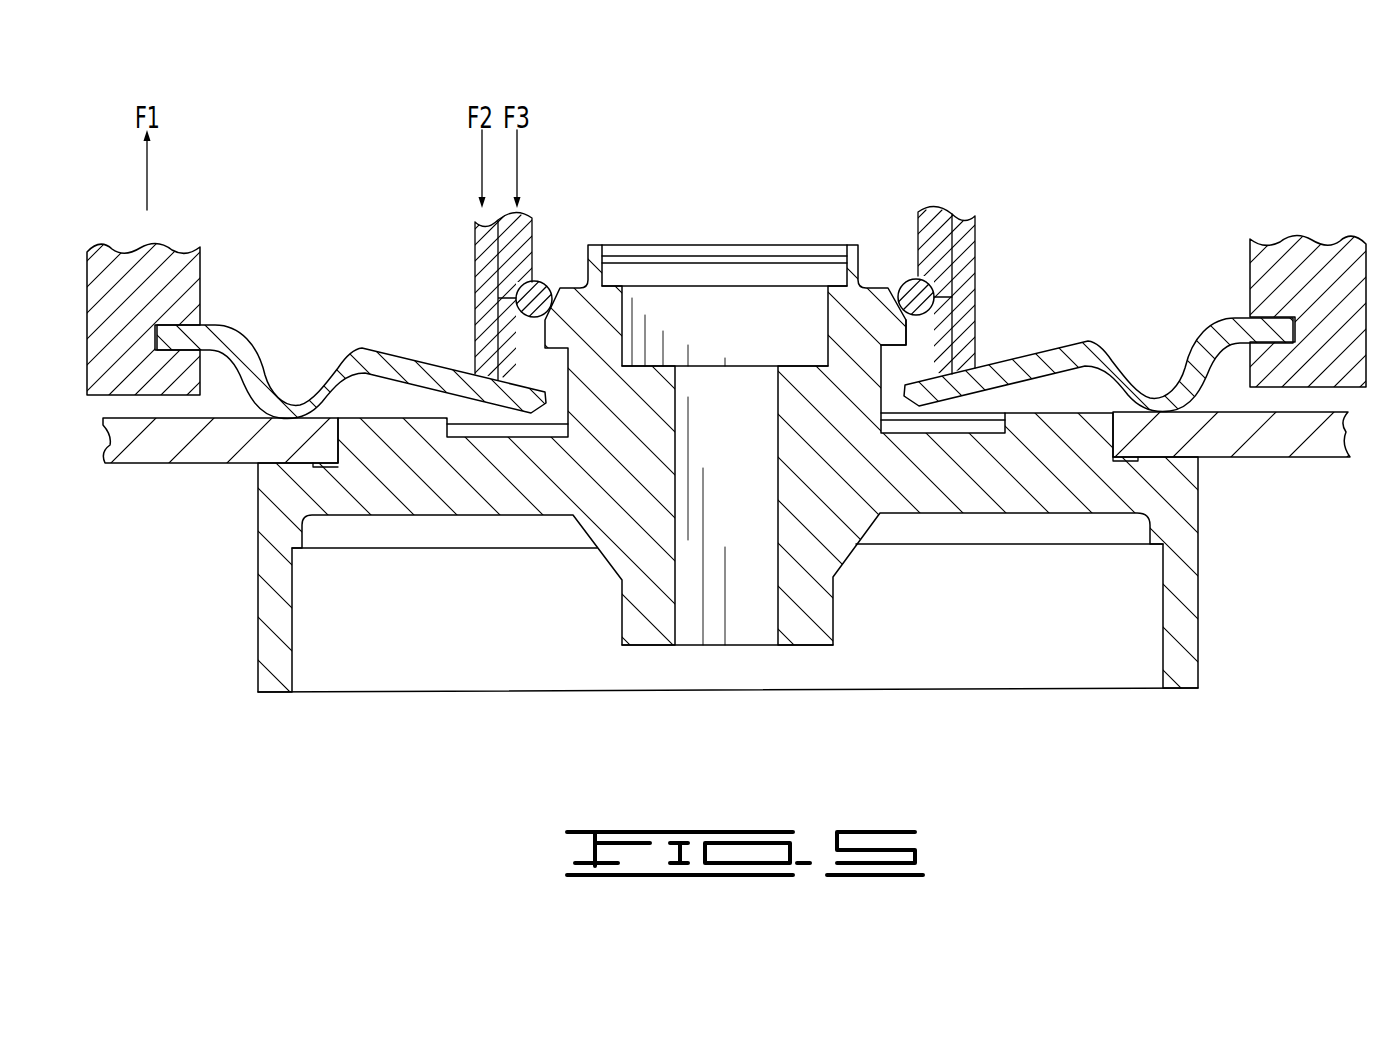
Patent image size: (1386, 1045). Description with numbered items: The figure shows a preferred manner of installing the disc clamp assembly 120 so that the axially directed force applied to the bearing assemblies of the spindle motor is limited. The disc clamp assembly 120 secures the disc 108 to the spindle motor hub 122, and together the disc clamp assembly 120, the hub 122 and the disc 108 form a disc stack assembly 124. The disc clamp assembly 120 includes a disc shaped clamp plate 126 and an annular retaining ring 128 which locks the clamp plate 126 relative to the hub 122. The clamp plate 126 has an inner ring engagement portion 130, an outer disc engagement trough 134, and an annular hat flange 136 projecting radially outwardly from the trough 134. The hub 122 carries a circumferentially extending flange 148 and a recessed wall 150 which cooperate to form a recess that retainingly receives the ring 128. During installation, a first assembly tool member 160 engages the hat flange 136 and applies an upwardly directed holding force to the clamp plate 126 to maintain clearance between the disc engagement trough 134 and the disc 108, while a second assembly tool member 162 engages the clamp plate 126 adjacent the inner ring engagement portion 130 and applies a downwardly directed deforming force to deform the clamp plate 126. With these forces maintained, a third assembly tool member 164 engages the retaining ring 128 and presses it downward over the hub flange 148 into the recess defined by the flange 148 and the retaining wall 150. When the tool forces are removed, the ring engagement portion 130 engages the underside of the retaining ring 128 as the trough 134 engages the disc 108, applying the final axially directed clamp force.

The disc clamp assembly 120 is at (412, 124).
The spindle motor hub 122 is at (622, 648).
The disc stack assembly 124 is at (190, 573).
The disc 108 is at (202, 452).
The clamp plate 126 is at (1045, 347).
The retaining ring 128 is at (903, 283).
The inner ring engagement portion 130 is at (522, 380).
The disc engagement trough 134 is at (290, 398).
The hat flange 136 is at (181, 250).
The hub flange 148 is at (910, 341).
The recessed wall 150 is at (886, 388).
The first assembly tool member 160 is at (1287, 241).
The second assembly tool member 162 is at (977, 258).
The third assembly tool member 164 is at (935, 216).